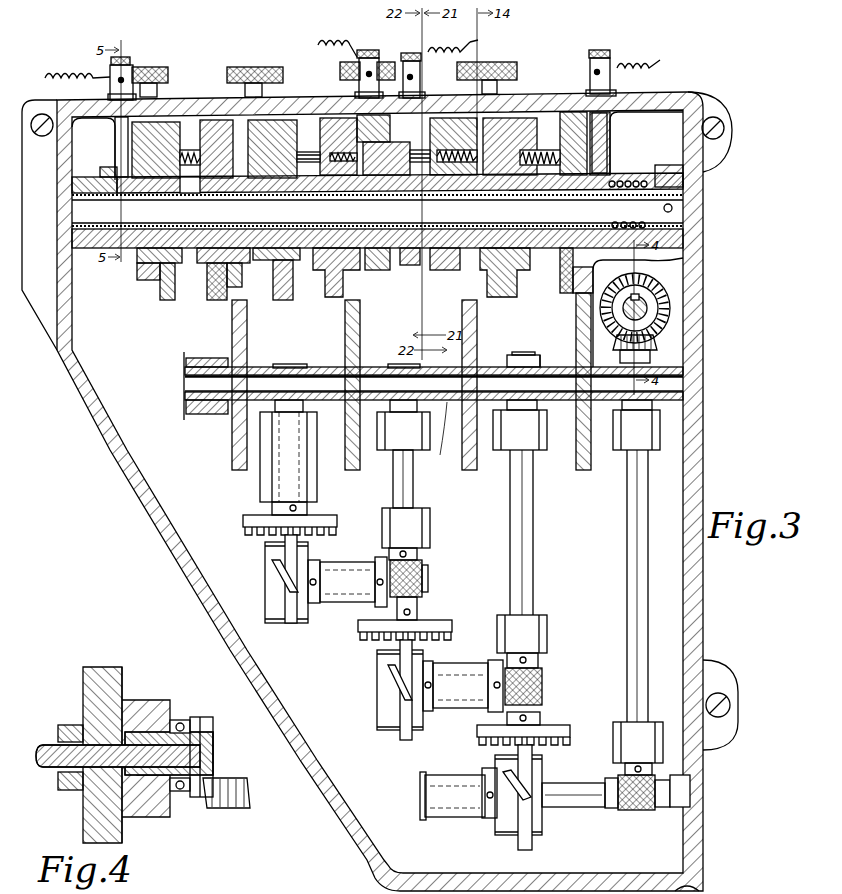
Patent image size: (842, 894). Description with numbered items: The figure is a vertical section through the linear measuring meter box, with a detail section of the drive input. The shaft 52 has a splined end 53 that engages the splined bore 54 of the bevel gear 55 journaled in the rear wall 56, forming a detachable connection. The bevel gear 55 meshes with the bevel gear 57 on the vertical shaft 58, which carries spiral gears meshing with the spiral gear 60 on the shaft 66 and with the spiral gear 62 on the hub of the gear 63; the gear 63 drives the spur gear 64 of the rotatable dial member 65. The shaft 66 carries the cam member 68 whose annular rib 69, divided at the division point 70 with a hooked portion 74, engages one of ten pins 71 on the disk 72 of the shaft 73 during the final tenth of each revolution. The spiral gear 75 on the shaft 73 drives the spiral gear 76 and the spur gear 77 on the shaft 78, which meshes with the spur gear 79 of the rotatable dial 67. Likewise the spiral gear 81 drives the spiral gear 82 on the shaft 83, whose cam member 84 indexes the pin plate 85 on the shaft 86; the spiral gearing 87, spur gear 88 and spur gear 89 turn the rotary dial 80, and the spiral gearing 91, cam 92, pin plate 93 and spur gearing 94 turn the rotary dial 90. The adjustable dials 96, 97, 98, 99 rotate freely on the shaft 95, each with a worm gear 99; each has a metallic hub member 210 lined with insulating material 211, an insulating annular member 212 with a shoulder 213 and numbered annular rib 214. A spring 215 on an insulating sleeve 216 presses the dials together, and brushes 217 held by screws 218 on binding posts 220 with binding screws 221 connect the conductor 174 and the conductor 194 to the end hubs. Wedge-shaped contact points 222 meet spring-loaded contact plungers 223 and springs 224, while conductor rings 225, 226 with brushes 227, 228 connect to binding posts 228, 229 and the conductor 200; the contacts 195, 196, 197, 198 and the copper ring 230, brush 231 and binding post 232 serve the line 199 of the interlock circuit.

In FIG. 3, the shaft 52 is at (648, 309).
In FIG. 4, the shaft 52 is at (43, 745).
In FIG. 4, the splined end 53 is at (72, 722).
In FIG. 4, the splined bore 54 is at (213, 765).
In FIG. 3, the bevel gear 55 is at (672, 294).
In FIG. 4, the bevel gear 55 is at (197, 720).
In FIG. 3, the rear wall 56 is at (676, 333).
In FIG. 4, the rear wall 56 is at (137, 825).
In FIG. 3, the bevel gear 57 is at (660, 343).
In FIG. 4, the bevel gear 57 is at (250, 783).
In FIG. 3, the vertical shaft 58 is at (643, 517).
In FIG. 3, the spiral gear 60 is at (632, 811).
In FIG. 3, the spiral gear 62 is at (655, 400).
In FIG. 3, the gear 63 is at (578, 340).
In FIG. 3, the spur gear 64 is at (583, 112).
In FIG. 3, the rotatable dial member 65 is at (560, 118).
In FIG. 3, the shaft 66 is at (590, 797).
In FIG. 3, the rotatable dial 67 is at (472, 290).
In FIG. 3, the cam member 68 is at (543, 774).
In FIG. 3, the annular rib 69 is at (530, 850).
In FIG. 3, the division point 70 is at (512, 835).
In FIG. 3, the pins 71 is at (572, 740).
In FIG. 3, the disk 72 is at (552, 730).
In FIG. 3, the shaft 73 is at (530, 524).
In FIG. 3, the hooked portion 74 is at (503, 772).
In FIG. 3, the spiral gear 75 is at (520, 353).
In FIG. 3, the spiral gear 76 is at (541, 358).
In FIG. 3, the spur gear 77 is at (477, 322).
In FIG. 3, the shaft 78 is at (445, 436).
In FIG. 3, the spur gear 79 is at (477, 310).
In FIG. 3, the rotary dial 80 is at (323, 125).
In FIG. 3, the spiral gear 81 is at (540, 661).
In FIG. 3, the spiral gear 82 is at (543, 688).
In FIG. 3, the shaft 83 is at (468, 662).
In FIG. 3, the cam member 84 is at (385, 715).
In FIG. 3, the pin plate 85 is at (437, 622).
In FIG. 3, the shaft 86 is at (412, 490).
In FIG. 3, the spiral gearing 87 is at (390, 364).
In FIG. 3, the spur gear 88 is at (345, 330).
In FIG. 3, the spur gear 89 is at (345, 125).
In FIG. 3, the rotary dial 90 is at (213, 120).
In FIG. 3, the spiral gearing 91 is at (425, 574).
In FIG. 3, the cam 92 is at (270, 606).
In FIG. 3, the pin plate 93 is at (325, 520).
In FIG. 3, the spur gearing 94 is at (247, 328).
In FIG. 3, the shaft 95 is at (133, 258).
In FIG. 3, the adjustable dial 96 is at (527, 115).
In FIG. 3, the adjustable dial 97 is at (395, 302).
In FIG. 3, the adjustable dial 98 is at (292, 125).
In FIG. 3, the adjustable dial / worm gear 99 is at (173, 125).
In FIG. 3, the conductor 174 is at (660, 60).
In FIG. 3, the conductor 194 is at (95, 72).
In FIG. 3, the contact 195 is at (425, 106).
In FIG. 3, the contact 196 is at (435, 294).
In FIG. 3, the contact 197 is at (410, 125).
In FIG. 3, the contact 198 is at (420, 290).
In FIG. 3, the line 199 is at (323, 51).
In FIG. 3, the conductor 200 is at (487, 42).
In FIG. 3, the hub member 210 is at (183, 295).
In FIG. 3, the insulating material / insulating sleeve 211 is at (112, 180).
In FIG. 3, the annular member 212 is at (178, 300).
In FIG. 3, the shoulder 213 is at (124, 270).
In FIG. 3, the annular rib 214 is at (150, 300).
In FIG. 3, the spring 215 is at (630, 181).
In FIG. 3, the insulating sleeve 216 is at (652, 180).
In FIG. 3, the brush 217 is at (610, 150).
In FIG. 3, the screw 218 is at (606, 128).
In FIG. 3, the binding post 220 is at (107, 66).
In FIG. 3, the binding screw 221 is at (608, 53).
In FIG. 3, the contact point 222 is at (188, 148).
In FIG. 3, the contact plunger 223 is at (553, 152).
In FIG. 3, the spring 224 is at (590, 148).
In FIG. 3, the conductor ring 225 is at (438, 290).
In FIG. 3, the conductor ring 226 is at (398, 305).
In FIG. 3, the brush 227 is at (440, 112).
In FIG. 3, the binding post / brush 228 is at (422, 88).
In FIG. 3, the binding post 229 is at (430, 65).
In FIG. 3, the copper ring 230 is at (392, 290).
In FIG. 3, the brush 231 is at (360, 112).
In FIG. 3, the binding post 232 is at (375, 62).